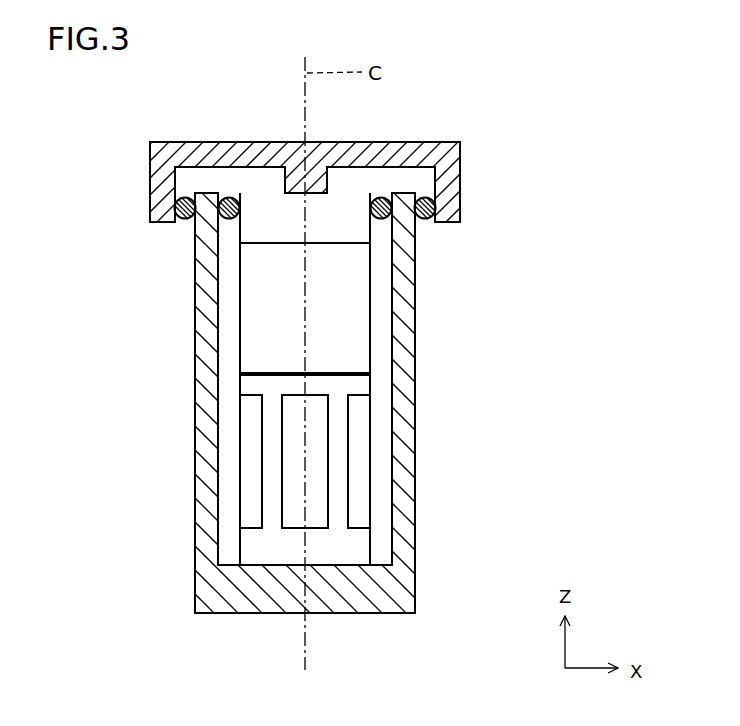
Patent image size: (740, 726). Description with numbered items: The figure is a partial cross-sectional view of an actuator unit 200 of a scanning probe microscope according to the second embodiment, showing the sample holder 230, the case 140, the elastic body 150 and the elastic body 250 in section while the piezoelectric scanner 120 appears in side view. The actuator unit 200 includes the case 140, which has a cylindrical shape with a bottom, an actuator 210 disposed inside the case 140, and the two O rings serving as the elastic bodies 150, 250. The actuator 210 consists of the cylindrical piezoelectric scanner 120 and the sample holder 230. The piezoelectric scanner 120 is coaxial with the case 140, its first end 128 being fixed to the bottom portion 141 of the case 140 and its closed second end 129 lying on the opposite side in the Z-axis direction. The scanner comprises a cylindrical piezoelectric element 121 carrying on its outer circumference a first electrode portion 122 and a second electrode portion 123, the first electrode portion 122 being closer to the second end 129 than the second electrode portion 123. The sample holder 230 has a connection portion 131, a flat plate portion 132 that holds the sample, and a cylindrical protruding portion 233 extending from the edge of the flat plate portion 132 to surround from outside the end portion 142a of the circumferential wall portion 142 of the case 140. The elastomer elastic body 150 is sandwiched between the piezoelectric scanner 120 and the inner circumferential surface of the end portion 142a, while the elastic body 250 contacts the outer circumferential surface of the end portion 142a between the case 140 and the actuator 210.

The actuator unit 200 is at (480, 106).
The actuator 210 is at (575, 145).
The sample holder 230 is at (462, 152).
The protruding portion 233 is at (148, 173).
The flat plate portion 132 is at (213, 139).
The connection portion 131 is at (275, 184).
The circumferential wall portion 142 is at (192, 380).
The end portion 142a is at (188, 209).
The case 140 is at (416, 591).
The bottom portion 141 is at (275, 616).
The elastic body 150 is at (398, 198).
The elastic body 250 is at (425, 212).
The second end 129 is at (261, 198).
The first end 128 is at (258, 560).
The piezoelectric scanner 120 is at (520, 327).
The first electrode portion 122 is at (340, 345).
The piezoelectric element 121 is at (355, 385).
The second electrode portion 123 is at (360, 425).